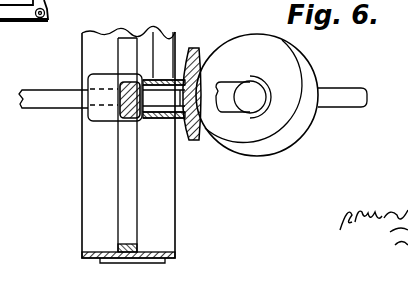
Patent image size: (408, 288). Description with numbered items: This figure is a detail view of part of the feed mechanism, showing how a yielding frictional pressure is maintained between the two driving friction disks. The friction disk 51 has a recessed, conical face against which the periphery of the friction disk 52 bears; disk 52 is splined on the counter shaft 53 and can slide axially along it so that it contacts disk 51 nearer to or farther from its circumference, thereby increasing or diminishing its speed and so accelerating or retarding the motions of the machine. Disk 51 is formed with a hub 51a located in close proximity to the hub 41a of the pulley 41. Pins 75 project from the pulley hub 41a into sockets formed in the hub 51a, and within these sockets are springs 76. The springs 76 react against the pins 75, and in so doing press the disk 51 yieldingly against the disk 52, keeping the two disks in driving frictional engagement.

The pulley 41 is at (164, 233).
The hub of the pulley 41a is at (104, 116).
The friction disk 51 is at (190, 48).
The hub of the friction disk 51a is at (163, 119).
The friction disk 52 is at (245, 50).
The counter shaft 53 is at (347, 97).
The pins 75 is at (157, 28).
The springs 76 is at (137, 125).